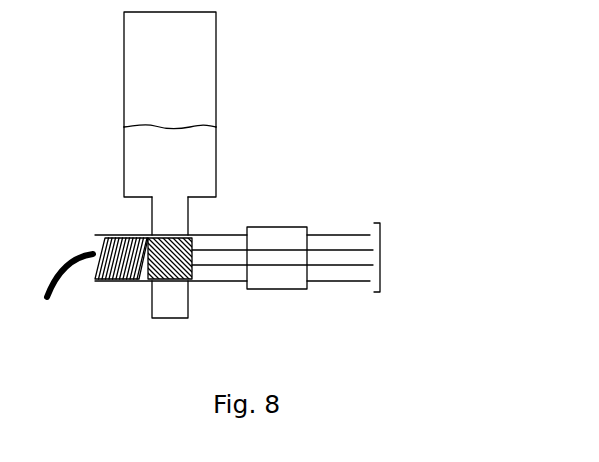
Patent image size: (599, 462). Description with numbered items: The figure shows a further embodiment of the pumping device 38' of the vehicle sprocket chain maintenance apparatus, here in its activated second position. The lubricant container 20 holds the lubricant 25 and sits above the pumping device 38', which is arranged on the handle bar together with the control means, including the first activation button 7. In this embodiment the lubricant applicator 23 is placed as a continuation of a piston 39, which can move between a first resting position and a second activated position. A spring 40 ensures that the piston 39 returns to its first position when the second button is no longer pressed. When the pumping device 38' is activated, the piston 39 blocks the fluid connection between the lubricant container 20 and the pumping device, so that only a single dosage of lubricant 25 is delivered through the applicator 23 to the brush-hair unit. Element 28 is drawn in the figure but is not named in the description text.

The lubricant container 20 is at (215, 55).
The lubricant 25 is at (197, 160).
The tube 28 is at (222, 233).
The first activation button 7 is at (382, 235).
The lubricant applicator 23 is at (60, 272).
The spring 40 is at (118, 279).
The piston 39 is at (172, 283).
The pumping device 38' is at (295, 288).